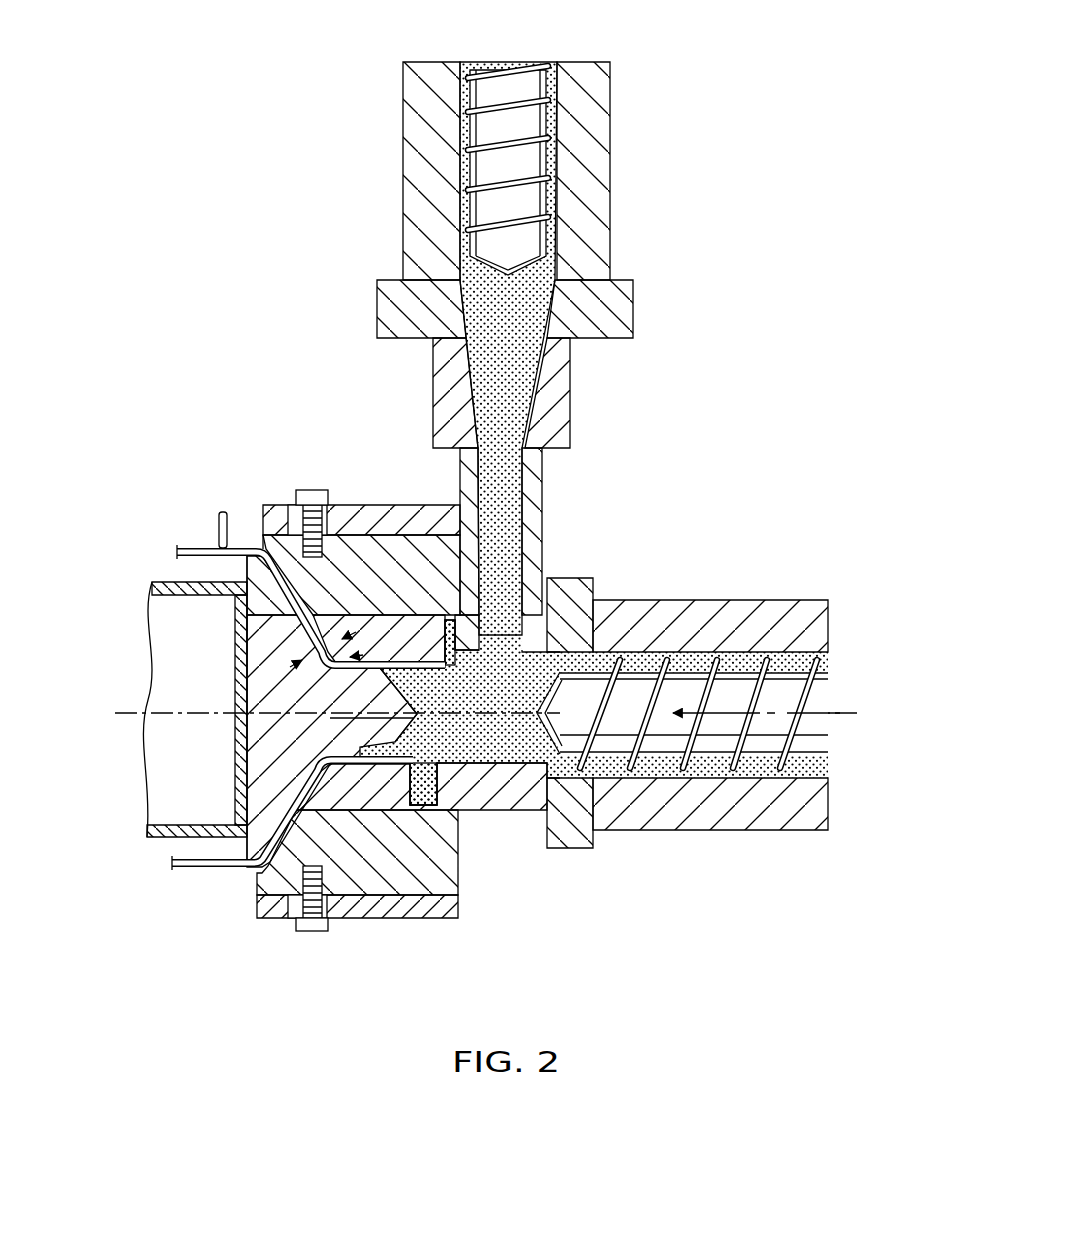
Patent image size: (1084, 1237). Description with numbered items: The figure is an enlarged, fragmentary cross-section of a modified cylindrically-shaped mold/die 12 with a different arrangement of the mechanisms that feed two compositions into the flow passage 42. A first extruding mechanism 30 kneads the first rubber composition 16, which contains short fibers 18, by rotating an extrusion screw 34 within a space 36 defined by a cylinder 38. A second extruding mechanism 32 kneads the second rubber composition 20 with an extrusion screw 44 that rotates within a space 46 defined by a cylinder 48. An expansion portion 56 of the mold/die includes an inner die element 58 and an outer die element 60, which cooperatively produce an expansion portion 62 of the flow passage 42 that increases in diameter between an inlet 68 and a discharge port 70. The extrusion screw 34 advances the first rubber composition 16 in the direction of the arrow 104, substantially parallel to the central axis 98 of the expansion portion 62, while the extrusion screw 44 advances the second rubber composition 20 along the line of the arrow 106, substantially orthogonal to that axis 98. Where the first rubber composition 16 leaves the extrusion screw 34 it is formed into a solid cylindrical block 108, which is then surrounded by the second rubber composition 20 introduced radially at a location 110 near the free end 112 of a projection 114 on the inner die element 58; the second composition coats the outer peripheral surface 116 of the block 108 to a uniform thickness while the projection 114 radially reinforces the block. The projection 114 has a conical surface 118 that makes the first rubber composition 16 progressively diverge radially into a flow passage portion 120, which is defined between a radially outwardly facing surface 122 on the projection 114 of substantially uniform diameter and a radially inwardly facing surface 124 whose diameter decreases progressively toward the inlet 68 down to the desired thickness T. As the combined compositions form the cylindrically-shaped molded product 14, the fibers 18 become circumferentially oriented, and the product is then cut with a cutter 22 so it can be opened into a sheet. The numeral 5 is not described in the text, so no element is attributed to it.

The arrow 106 is at (508, 88).
The extrusion screw 44 is at (490, 132).
The second extruding mechanism 32 is at (636, 162).
The cylinder 48 is at (590, 226).
The space 46 is at (548, 283).
The second rubber composition 20 is at (508, 322).
The cylindrically-shaped mold/die 12 is at (671, 433).
The cutter 22 is at (219, 530).
The discharge port 70 is at (258, 546).
The inlet 68 is at (376, 665).
The radially outwardly facing surface 122 is at (392, 663).
The conical surface 118 is at (430, 617).
The cylindrically-shaped molded product 14 is at (212, 553).
The outer peripheral surface 116 is at (482, 655).
The extrusion screw 34 is at (684, 697).
The first extruding mechanism 30 is at (792, 577).
The expansion portion 62 is at (287, 617).
The core side wall 5 is at (235, 645).
The central axis 98 is at (122, 712).
The thickness T is at (247, 673).
The expansion portion 56 is at (204, 733).
The inner die element 58 is at (290, 745).
The flow passage portion 120 is at (295, 750).
The flow passage 42 is at (235, 862).
The outer die element 60 is at (320, 835).
The projection 114 is at (362, 768).
The radially inwardly facing surface 124 is at (395, 775).
The free end 112 is at (460, 775).
The block 108 is at (503, 725).
The location 110 is at (448, 675).
The short fibers 18 is at (500, 778).
The first rubber composition 16 is at (560, 766).
The space 36 is at (722, 672).
The cylinder 38 is at (774, 813).
The arrow 104 is at (853, 712).